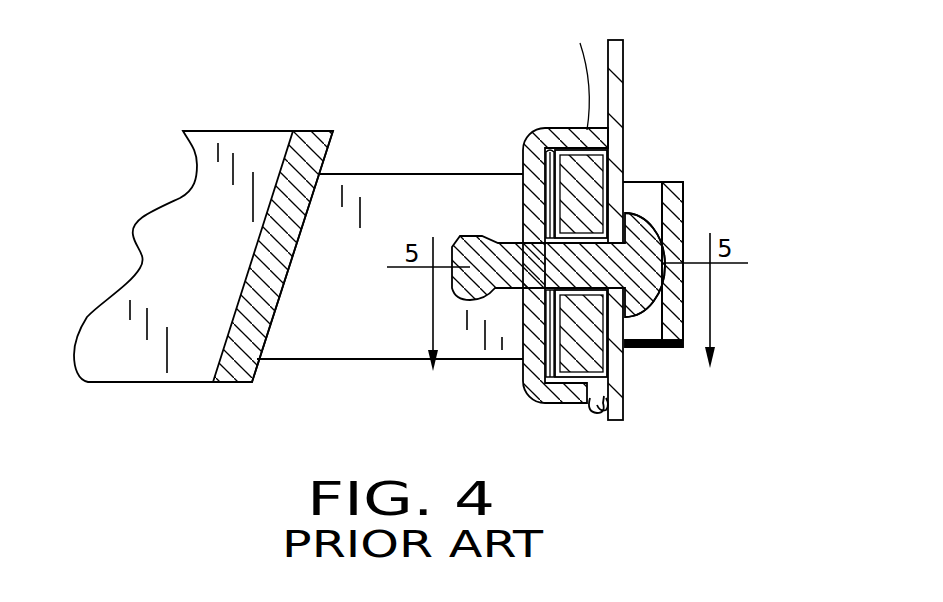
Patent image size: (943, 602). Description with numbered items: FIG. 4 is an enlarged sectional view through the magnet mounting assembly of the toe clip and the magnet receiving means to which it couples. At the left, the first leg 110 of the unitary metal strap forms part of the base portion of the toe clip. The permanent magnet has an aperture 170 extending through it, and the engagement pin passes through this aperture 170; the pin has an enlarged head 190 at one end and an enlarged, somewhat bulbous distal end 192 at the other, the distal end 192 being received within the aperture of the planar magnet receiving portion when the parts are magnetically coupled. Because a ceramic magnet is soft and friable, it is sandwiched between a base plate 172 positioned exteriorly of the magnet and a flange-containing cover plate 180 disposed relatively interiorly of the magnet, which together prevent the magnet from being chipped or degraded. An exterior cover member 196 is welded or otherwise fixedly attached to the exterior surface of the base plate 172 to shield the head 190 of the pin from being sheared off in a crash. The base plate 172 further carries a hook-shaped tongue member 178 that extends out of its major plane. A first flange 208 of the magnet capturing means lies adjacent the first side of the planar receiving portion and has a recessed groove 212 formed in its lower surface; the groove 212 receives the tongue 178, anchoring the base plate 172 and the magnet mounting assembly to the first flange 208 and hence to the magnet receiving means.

The first leg 110 is at (380, 152).
The bulbus distal end 192 is at (472, 232).
The enlarged head 190 is at (652, 240).
The cover plate 180 is at (560, 140).
The first flange 208 is at (553, 402).
The aperture 170 is at (587, 187).
The base plate 172 is at (625, 382).
The exterior cover member 196 is at (680, 190).
The recessed groove 212 is at (592, 402).
The hook shaped tongue member 178 is at (598, 417).